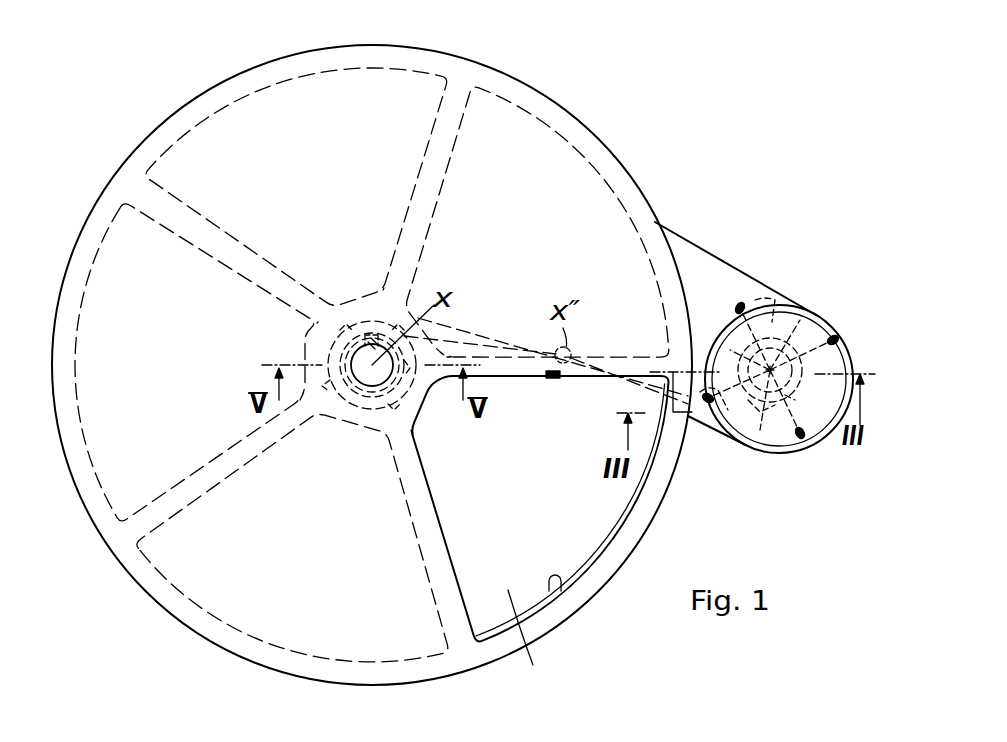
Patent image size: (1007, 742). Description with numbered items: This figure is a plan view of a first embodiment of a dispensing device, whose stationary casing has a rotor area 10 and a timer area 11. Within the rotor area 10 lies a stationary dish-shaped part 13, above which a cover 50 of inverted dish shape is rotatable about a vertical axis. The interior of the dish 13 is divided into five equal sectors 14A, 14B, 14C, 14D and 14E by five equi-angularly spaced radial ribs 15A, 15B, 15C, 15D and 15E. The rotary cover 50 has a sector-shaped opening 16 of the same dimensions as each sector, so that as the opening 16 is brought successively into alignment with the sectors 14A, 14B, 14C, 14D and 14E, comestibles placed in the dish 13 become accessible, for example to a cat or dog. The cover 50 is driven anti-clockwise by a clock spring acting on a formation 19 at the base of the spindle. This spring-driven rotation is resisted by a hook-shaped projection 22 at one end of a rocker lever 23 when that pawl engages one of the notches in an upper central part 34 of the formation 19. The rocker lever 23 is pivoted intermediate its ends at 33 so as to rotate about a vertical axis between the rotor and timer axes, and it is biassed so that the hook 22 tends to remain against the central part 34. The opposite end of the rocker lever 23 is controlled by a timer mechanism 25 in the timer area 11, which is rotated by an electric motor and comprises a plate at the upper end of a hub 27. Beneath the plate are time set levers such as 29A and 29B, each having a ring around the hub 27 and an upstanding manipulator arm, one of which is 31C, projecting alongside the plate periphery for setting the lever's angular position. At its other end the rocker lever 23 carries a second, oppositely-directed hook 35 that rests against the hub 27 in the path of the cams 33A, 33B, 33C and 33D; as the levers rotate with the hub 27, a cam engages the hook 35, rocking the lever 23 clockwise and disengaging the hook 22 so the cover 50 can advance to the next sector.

The rotor area 10 is at (242, 50).
The timer area 11 is at (808, 256).
The stationary dish-shaped part 13 is at (534, 640).
The sector 14A is at (577, 515).
The sector 14B is at (276, 600).
The sector 14C is at (140, 462).
The sector 14D is at (221, 160).
The sector 14E is at (553, 197).
The radial rib 15A is at (434, 547).
The radial rib 15B is at (198, 482).
The radial rib 15C is at (214, 257).
The radial rib 15D is at (428, 192).
The radial rib 15E is at (628, 356).
The sector-shaped opening 16 is at (563, 588).
The formation 19 is at (340, 312).
The hook-shaped projection 22 is at (364, 333).
The rocker lever 23 is at (487, 342).
The timer mechanism 25 is at (806, 318).
The hub 27 is at (780, 445).
The time set lever 29A is at (716, 428).
The time set lever 29B is at (766, 305).
The manipulator arm 31C is at (838, 344).
The pivot 33 is at (550, 380).
The cam 33A is at (720, 430).
The cam 33B is at (735, 308).
The cam 33C is at (830, 332).
The cam 33D is at (805, 440).
The upper central part 34 is at (318, 353).
The second hook 35 is at (768, 440).
The cover 50 is at (340, 558).